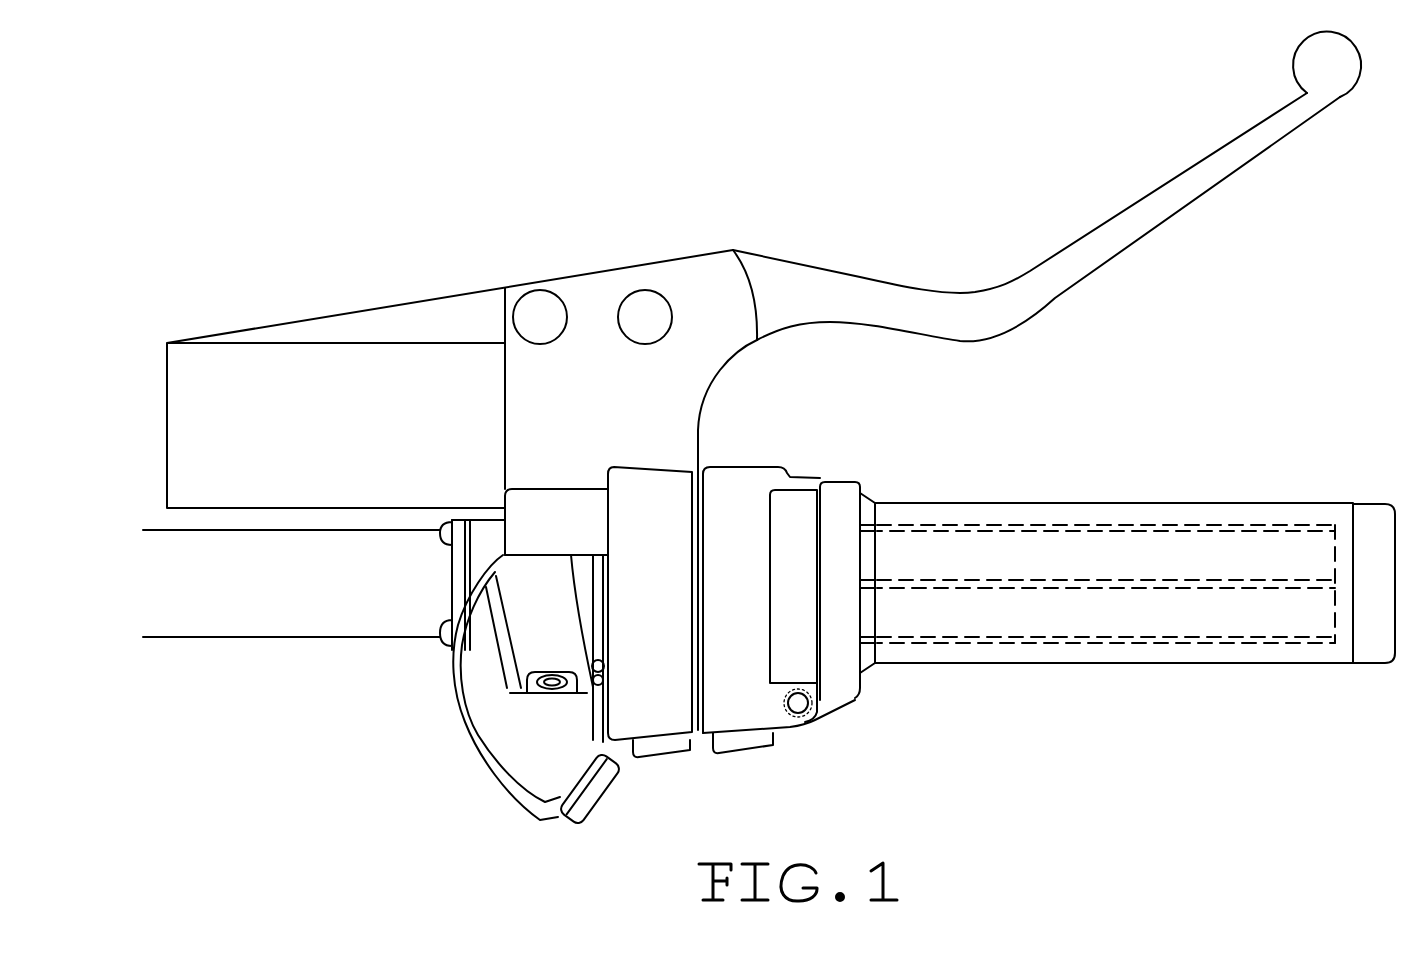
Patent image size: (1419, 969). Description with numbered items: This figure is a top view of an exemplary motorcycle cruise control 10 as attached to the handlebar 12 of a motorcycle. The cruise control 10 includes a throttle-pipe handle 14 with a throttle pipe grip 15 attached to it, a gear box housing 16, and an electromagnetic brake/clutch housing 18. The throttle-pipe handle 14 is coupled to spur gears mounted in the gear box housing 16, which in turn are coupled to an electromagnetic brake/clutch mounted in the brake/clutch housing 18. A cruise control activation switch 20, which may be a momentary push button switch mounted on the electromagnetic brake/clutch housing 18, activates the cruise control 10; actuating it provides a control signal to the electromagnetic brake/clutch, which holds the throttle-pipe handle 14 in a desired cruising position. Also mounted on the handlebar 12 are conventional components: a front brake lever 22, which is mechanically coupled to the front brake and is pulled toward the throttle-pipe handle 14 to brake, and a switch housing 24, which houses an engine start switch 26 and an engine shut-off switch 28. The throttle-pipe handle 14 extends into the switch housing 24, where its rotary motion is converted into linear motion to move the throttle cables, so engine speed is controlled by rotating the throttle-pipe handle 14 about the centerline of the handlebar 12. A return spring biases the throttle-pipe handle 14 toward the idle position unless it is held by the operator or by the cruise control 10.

The motorcycle cruise control 10 is at (1056, 420).
The handlebar 12 is at (302, 637).
The throttle-pipe handle 14 is at (1220, 642).
The throttle pipe grip 15 is at (1192, 505).
The gear box housing 16 is at (853, 703).
The electromagnetic brake/clutch housing 18 is at (457, 708).
The cruise control activation switch 20 is at (602, 802).
The front brake lever 22 is at (1125, 212).
The switch housing 24 is at (744, 467).
The engine start switch 26 is at (668, 758).
The engine shut-off switch 28 is at (752, 750).